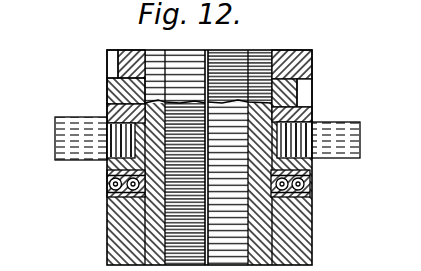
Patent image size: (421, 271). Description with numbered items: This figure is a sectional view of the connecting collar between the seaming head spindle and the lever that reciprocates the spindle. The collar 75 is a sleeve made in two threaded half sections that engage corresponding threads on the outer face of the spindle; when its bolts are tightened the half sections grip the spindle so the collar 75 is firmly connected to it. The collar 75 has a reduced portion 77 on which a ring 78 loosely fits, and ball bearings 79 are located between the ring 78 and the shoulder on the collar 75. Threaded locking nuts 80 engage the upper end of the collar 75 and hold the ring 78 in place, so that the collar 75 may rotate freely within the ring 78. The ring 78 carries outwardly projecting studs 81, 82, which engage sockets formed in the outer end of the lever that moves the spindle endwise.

The collar 75 is at (107, 230).
The reduced portion 77 is at (292, 112).
The ring 78 is at (312, 122).
The ball bearings 79 is at (310, 185).
The threaded locking nuts 80 is at (291, 55).
The outwardly projecting stud 81 is at (65, 132).
The outwardly projecting stud 82 is at (360, 139).